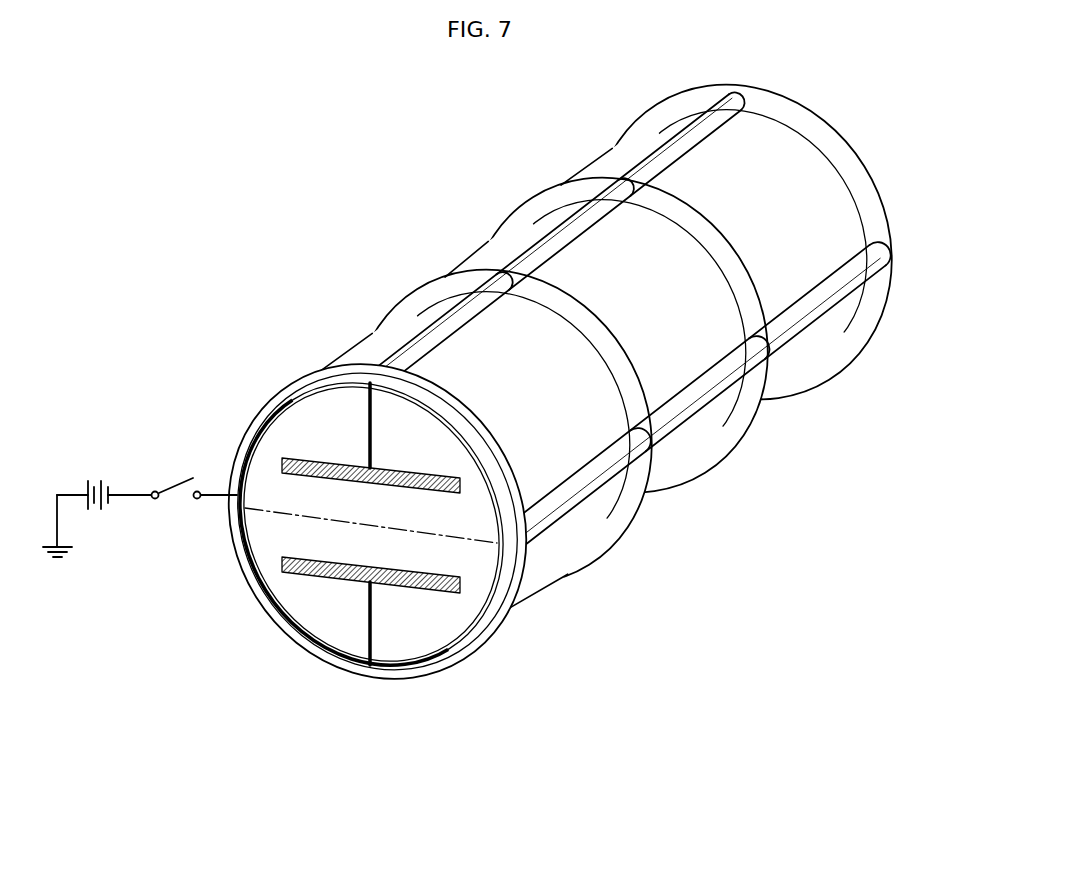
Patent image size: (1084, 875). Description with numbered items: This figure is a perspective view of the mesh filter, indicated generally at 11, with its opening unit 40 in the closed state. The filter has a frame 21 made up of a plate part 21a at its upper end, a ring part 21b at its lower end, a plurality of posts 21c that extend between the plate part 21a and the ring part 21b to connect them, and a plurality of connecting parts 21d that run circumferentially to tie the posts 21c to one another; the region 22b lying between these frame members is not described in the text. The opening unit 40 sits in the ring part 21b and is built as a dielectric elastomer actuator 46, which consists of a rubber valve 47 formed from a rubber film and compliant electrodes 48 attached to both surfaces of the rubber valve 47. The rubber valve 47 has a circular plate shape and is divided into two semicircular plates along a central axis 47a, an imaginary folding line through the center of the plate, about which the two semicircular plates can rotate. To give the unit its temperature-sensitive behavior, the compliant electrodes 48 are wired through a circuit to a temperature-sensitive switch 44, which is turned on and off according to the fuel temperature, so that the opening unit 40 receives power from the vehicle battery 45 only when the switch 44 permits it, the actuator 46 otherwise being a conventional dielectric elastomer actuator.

The ion generating device 11 is at (808, 428).
The frame 21 is at (852, 156).
The plate part 21a is at (861, 190).
The ring part 21b is at (492, 620).
The posts 21c is at (817, 300).
The connecting parts 21d is at (628, 520).
The body side surface 22b is at (550, 463).
The opening unit 40 is at (306, 599).
The temperature-sensitive switch 44 is at (178, 480).
The vehicle battery 45 is at (98, 480).
The dielectric elastomer actuator 46 is at (492, 722).
The rubber valve 47 is at (455, 623).
The central axis 47a is at (246, 508).
The compliant electrodes 48 is at (405, 586).